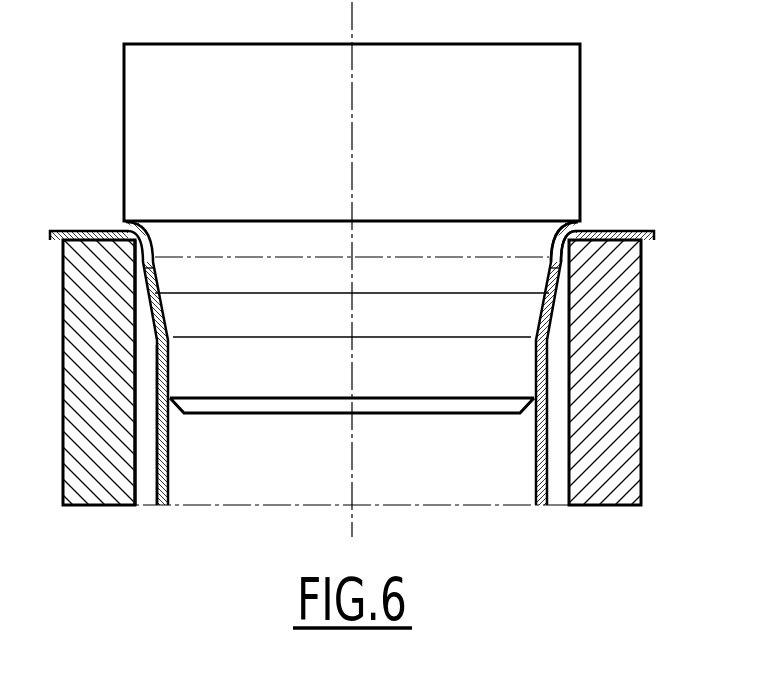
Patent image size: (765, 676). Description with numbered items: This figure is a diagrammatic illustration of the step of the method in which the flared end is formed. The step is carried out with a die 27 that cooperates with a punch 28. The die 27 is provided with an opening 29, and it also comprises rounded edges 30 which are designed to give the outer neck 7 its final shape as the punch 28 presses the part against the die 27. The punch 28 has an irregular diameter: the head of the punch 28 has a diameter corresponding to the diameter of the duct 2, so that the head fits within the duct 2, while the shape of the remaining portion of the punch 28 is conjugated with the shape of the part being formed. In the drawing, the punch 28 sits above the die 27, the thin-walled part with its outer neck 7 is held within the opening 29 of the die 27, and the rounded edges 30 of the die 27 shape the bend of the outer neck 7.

The duct 2 is at (466, 490).
The outer neck 7 is at (75, 210).
The die 27 is at (600, 435).
The punch 28 is at (543, 150).
The opening 29 is at (147, 484).
The rounded edges 30 is at (592, 266).